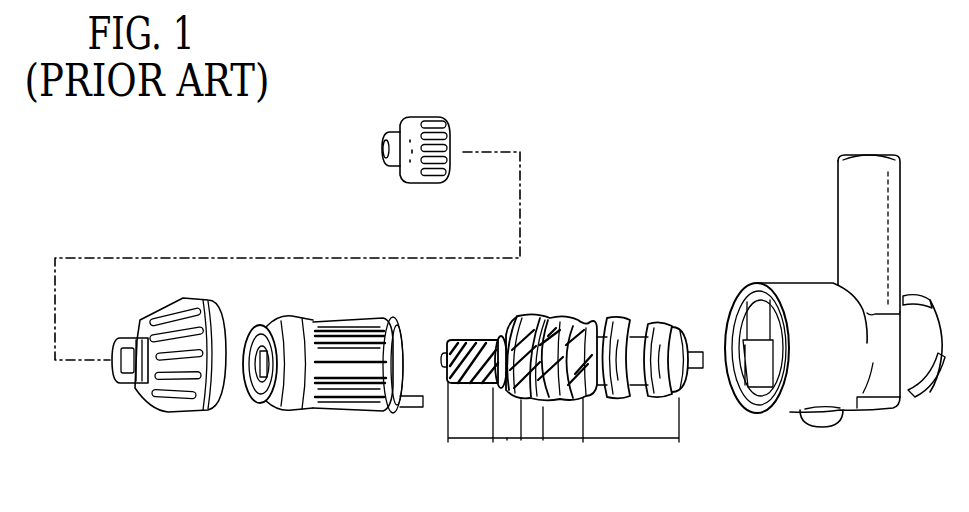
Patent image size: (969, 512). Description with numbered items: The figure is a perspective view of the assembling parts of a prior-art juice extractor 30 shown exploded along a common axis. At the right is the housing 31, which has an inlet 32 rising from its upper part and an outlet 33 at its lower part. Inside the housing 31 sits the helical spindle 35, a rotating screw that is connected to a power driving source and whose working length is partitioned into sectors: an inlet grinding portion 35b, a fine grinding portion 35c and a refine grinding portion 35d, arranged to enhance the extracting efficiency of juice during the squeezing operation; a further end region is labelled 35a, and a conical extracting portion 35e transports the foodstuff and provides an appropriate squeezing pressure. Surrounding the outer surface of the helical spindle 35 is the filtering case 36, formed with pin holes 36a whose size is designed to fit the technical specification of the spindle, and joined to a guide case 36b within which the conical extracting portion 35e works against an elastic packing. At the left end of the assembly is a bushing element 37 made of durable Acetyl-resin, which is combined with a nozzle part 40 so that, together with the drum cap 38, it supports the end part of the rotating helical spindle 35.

The juice extractor 30 is at (677, 182).
The housing 31 is at (783, 283).
The inlet 32 is at (853, 212).
The outlet 33 is at (833, 420).
The helical spindle 35 is at (584, 306).
The screw thread portion 35a is at (470, 412).
The inlet grinding portion 35b is at (631, 420).
The fine grinding portion 35c is at (538, 436).
The refine grinding portion 35d is at (533, 440).
The conical extracting portion 35e is at (507, 440).
The filtering case 36 is at (341, 318).
The pin holes 36a is at (351, 410).
The guide case 36b is at (282, 410).
The bushing element 37 is at (121, 381).
The drum cap 38 is at (143, 318).
The nozzle part 40 is at (403, 178).